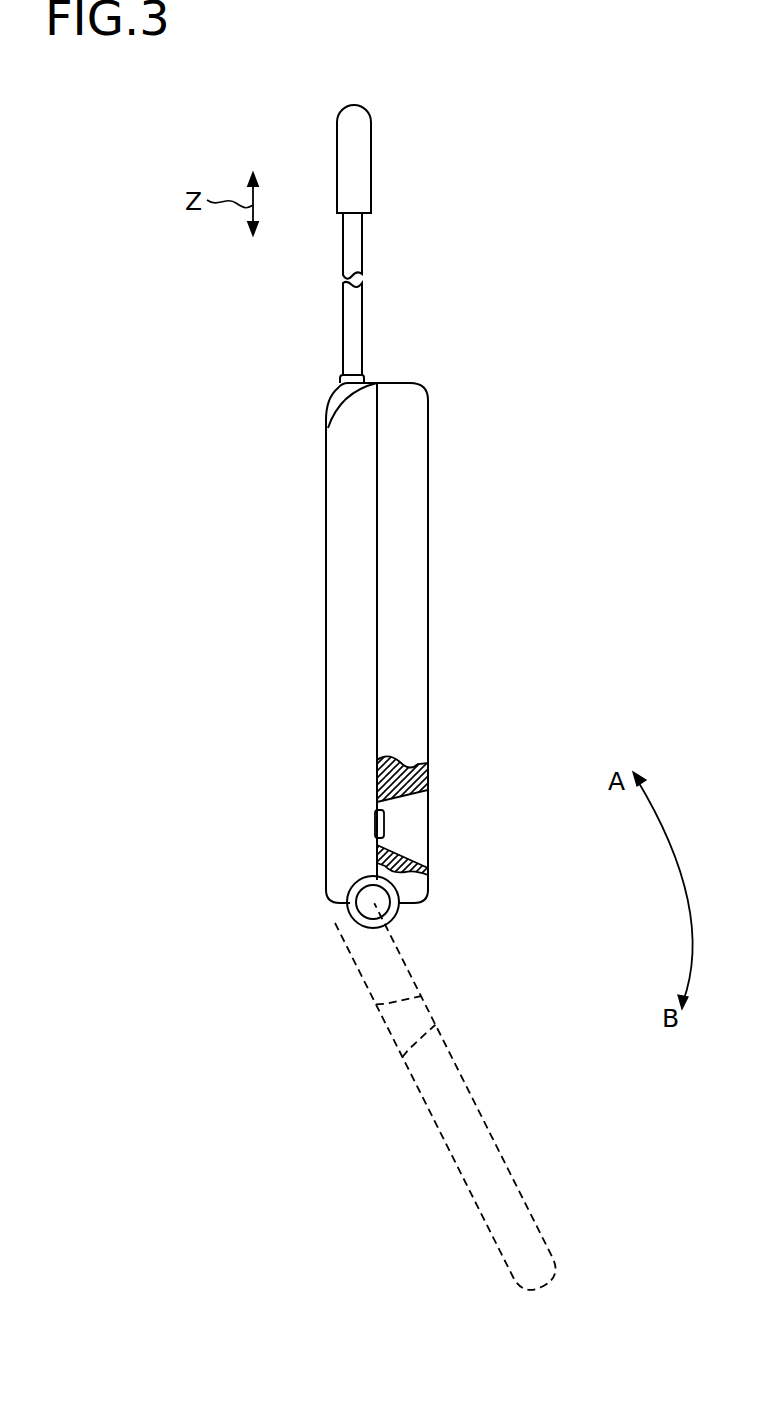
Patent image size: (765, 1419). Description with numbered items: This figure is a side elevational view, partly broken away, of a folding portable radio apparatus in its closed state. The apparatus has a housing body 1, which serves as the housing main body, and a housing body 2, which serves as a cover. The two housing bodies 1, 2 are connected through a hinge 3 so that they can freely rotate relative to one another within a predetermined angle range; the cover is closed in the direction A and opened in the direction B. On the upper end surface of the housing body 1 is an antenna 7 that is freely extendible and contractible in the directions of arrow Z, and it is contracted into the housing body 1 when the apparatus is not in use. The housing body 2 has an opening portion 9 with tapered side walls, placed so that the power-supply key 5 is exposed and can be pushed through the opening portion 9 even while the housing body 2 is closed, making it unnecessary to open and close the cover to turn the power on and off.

The housing body 1 is at (326, 473).
The housing body 2 is at (428, 578).
The hinge 3 is at (400, 912).
The power-supply key 5 is at (376, 823).
The antenna 7 is at (371, 165).
The opening portion 9 is at (403, 825).